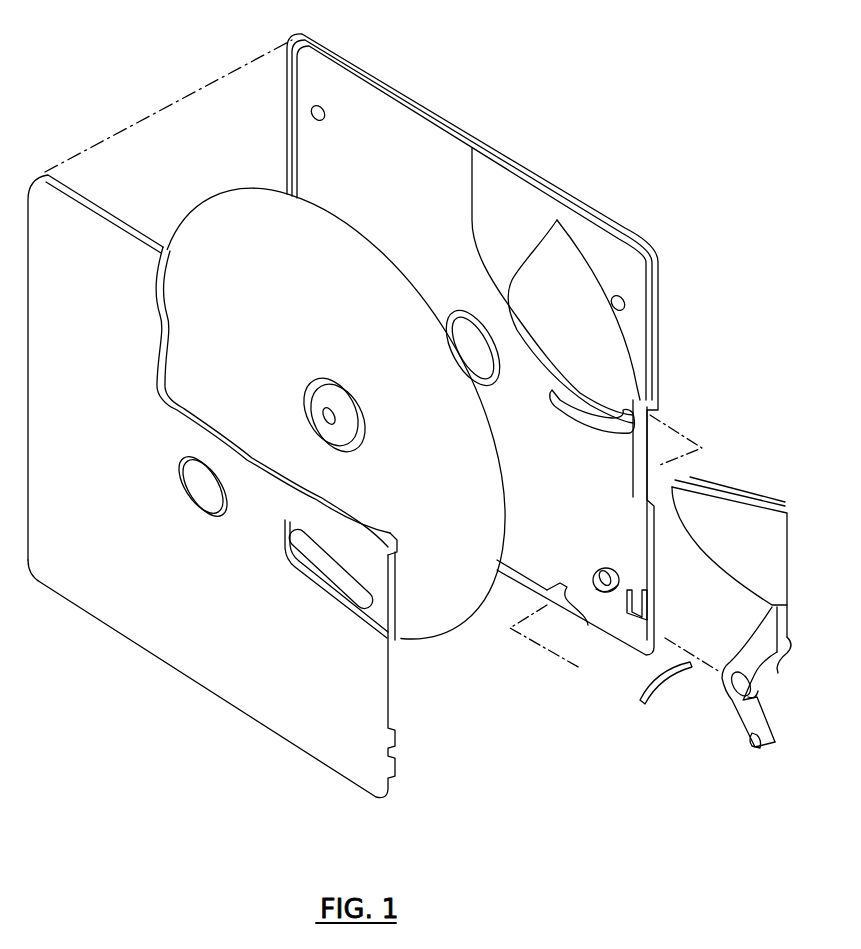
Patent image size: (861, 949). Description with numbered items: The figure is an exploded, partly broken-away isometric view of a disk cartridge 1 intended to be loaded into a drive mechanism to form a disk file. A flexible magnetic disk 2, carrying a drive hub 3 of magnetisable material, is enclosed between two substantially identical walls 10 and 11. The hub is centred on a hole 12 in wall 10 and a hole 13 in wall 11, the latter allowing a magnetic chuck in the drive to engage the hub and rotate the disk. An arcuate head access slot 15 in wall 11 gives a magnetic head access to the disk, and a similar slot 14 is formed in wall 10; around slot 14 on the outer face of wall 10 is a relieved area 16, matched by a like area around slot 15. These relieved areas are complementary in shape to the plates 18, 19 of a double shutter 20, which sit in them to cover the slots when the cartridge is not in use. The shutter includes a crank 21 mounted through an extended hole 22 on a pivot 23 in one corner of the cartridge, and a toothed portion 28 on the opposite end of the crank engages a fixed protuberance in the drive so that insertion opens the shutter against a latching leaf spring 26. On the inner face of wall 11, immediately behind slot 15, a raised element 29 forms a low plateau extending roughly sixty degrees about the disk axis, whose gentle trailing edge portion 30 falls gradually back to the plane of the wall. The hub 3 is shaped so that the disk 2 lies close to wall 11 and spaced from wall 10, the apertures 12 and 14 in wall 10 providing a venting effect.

The disk cartridge 1 is at (181, 73).
The flexible magnetic disk 2 is at (189, 213).
The drive hub 3 is at (318, 382).
The wall 10 is at (192, 672).
The wall 11 is at (660, 277).
The hole 12 is at (188, 487).
The hole 13 is at (448, 314).
The slot 14 is at (337, 577).
The arcuate head access slot 15 is at (557, 408).
The relieved area 16 is at (383, 610).
The plate 18 is at (728, 553).
The plate 19 is at (745, 474).
The double shutter 20 is at (786, 497).
The crank 21 is at (790, 641).
The extended hole 22 is at (753, 700).
The pivot 23 is at (608, 547).
The spring clip 26 is at (652, 688).
The toothed portion 28 is at (777, 747).
The raised element 29 is at (615, 248).
The trailing edge portion 30 is at (547, 208).